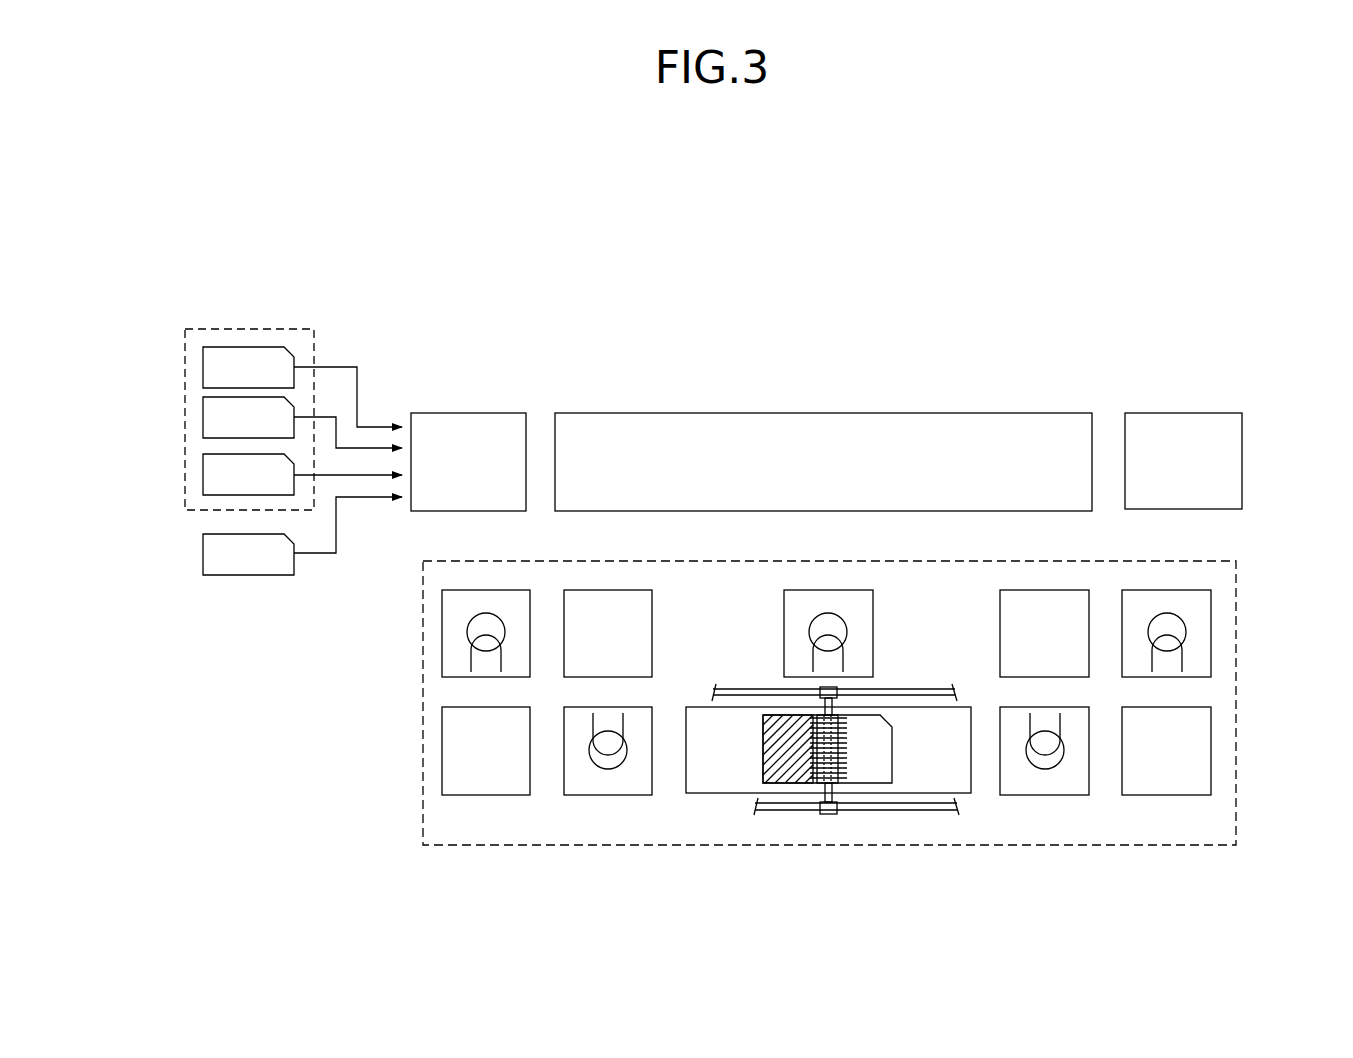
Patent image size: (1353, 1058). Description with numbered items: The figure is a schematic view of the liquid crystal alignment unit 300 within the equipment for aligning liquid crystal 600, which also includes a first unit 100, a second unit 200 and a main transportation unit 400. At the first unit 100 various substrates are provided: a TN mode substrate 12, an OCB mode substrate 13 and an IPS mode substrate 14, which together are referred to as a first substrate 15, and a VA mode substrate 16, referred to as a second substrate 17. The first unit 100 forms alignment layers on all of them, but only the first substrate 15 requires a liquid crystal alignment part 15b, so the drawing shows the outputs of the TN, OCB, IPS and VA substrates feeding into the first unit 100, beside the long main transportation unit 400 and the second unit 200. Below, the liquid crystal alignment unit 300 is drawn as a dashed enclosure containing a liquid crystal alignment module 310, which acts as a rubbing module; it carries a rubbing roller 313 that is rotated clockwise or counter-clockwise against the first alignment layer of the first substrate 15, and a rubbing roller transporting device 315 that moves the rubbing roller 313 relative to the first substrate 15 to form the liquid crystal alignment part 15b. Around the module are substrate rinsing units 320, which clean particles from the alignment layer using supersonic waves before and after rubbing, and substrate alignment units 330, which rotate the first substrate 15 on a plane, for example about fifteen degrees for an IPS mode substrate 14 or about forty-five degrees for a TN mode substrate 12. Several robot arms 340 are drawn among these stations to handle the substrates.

The TN mode substrate 12 is at (203, 362).
The OCB mode substrate 13 is at (203, 418).
The IPS mode substrate 14 is at (203, 475).
The first substrate 15 is at (103, 460).
The liquid crystal alignment part 15b is at (772, 757).
The VA mode substrate 16 is at (203, 558).
The second substrate 17 is at (194, 580).
The first unit 100 is at (485, 402).
The second unit 200 is at (1203, 402).
The liquid crystal alignment unit 300 is at (1238, 583).
The liquid crystal alignment module 310 is at (860, 828).
The rubbing roller 313 is at (855, 741).
The rubbing roller transporting device 315 is at (893, 689).
The substrate rinsing unit 320 is at (453, 758).
The substrate alignment unit 330 is at (637, 614).
The robot arm 340 is at (467, 652).
The main transportation unit 400 is at (855, 402).
The equipment for aligning liquid crystal 600 is at (1007, 330).